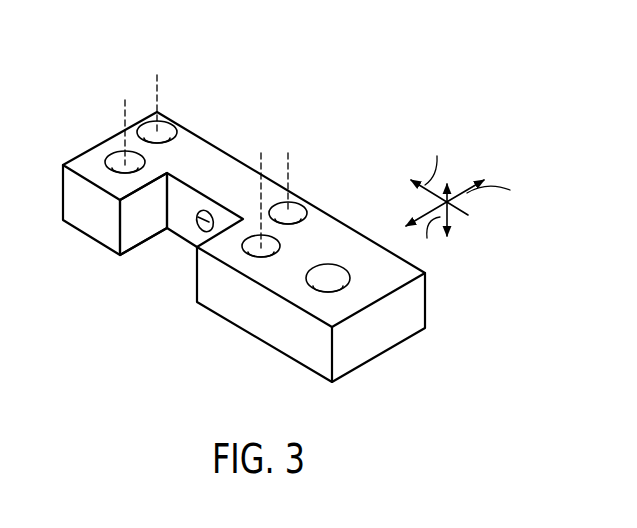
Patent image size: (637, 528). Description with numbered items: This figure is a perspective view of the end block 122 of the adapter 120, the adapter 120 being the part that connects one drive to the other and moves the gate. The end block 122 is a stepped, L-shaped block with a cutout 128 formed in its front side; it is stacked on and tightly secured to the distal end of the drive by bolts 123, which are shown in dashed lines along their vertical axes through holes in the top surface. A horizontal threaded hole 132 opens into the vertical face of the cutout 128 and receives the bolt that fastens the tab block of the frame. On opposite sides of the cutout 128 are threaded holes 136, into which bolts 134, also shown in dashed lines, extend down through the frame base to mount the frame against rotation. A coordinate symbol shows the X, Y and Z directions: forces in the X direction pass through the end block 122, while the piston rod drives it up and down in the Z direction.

The adapter 120 is at (480, 233).
The end block 122 is at (412, 325).
The bolts 123 is at (160, 76).
The cutout 128 is at (132, 230).
The threaded hole 132 is at (197, 214).
The bolts 134 is at (122, 116).
The threaded holes 136 is at (122, 172).